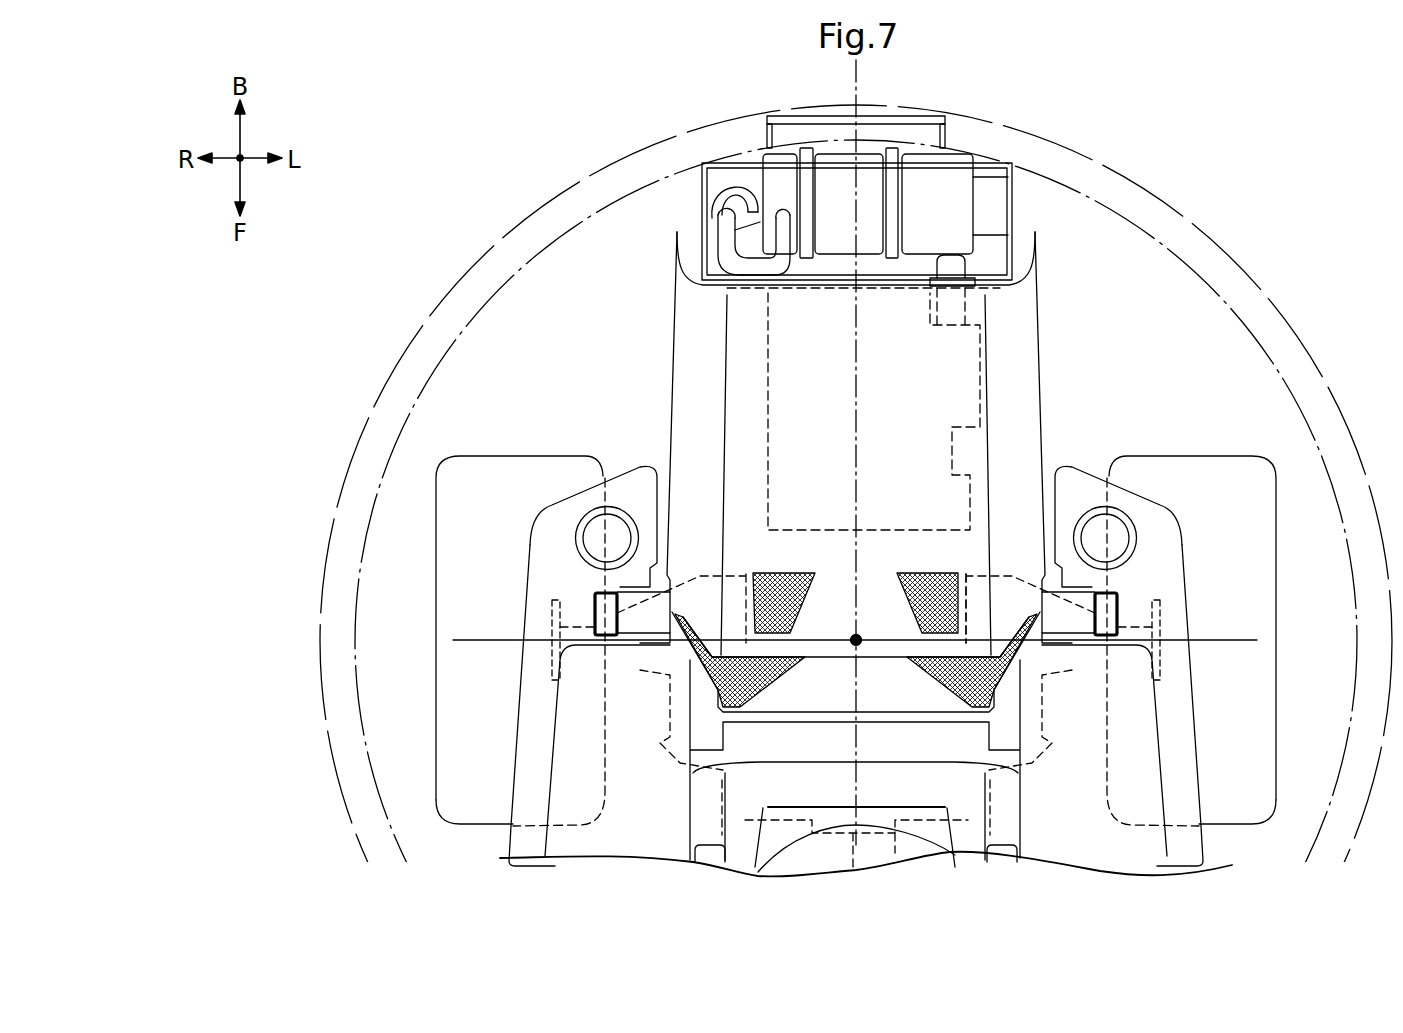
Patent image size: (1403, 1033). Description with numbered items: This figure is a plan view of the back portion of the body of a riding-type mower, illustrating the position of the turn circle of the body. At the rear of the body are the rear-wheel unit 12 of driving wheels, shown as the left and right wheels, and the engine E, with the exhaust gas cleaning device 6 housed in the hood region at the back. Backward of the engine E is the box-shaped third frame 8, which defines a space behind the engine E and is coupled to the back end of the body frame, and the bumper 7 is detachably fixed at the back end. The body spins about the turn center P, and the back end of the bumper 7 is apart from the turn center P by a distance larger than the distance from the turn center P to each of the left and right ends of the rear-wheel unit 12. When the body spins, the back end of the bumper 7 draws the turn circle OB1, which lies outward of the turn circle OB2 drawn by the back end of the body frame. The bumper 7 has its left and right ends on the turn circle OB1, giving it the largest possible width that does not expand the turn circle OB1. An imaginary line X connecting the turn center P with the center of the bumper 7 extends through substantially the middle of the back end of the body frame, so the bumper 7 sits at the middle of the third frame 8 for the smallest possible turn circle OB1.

The bumper 7 is at (805, 120).
The exhaust gas cleaning device 6 is at (958, 168).
The third frame 8 is at (706, 205).
The rear-wheel unit 12 is at (1212, 465).
The engine E is at (768, 400).
The turn center P is at (855, 636).
The imaginary line X is at (857, 452).
The turn circle OB1 is at (1140, 187).
The turn circle OB2 is at (1247, 327).